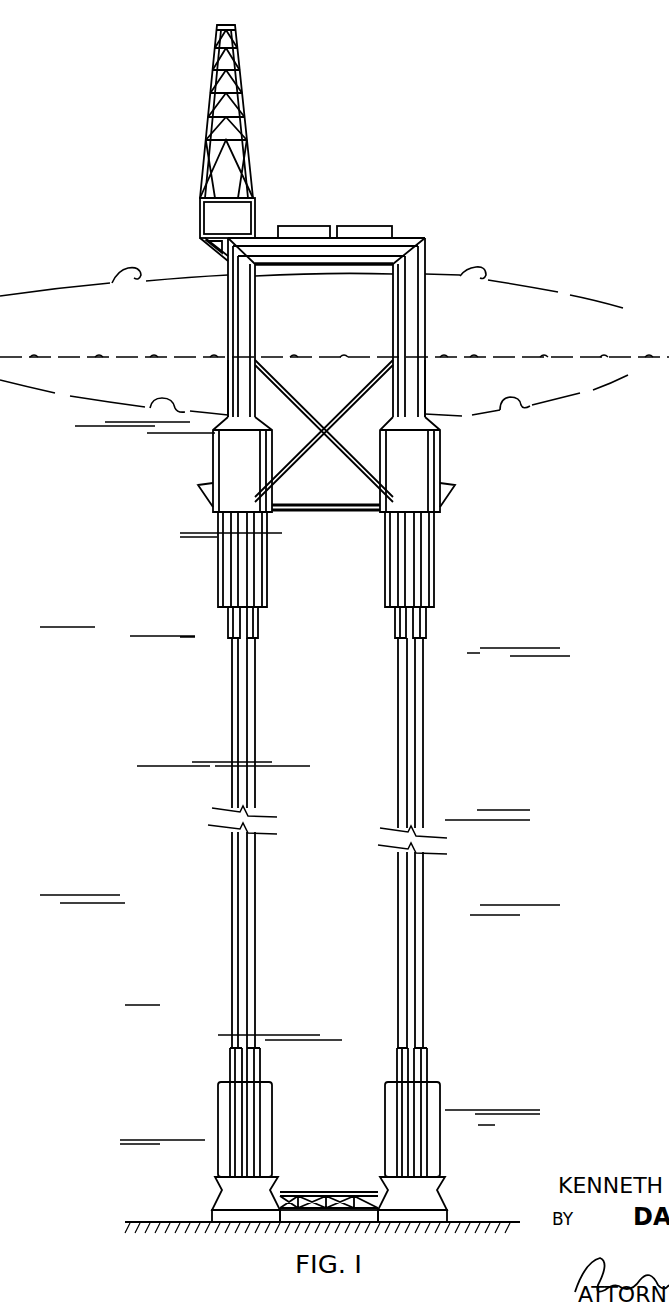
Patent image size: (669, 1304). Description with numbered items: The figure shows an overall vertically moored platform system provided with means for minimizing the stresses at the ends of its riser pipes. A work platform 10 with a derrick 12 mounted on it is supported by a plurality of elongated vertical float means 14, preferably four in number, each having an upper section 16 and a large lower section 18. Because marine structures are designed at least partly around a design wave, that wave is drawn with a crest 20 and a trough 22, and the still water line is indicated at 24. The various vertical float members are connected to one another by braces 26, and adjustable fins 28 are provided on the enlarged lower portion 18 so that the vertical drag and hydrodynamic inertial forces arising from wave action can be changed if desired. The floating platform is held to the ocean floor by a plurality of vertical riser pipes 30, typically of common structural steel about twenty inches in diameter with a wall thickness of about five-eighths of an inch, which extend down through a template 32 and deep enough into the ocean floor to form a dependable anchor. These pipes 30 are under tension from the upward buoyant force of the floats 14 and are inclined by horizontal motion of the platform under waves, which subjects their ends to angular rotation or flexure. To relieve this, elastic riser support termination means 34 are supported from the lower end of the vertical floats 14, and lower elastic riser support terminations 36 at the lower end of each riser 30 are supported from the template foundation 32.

The work platform 10 is at (400, 241).
The derrick 12 is at (238, 77).
The elongated vertical float means 14 is at (425, 312).
The upper section 16 is at (426, 386).
The large lower section 18 is at (430, 457).
The crest 20 is at (522, 285).
The trough 22 is at (125, 405).
The still water line 24 is at (578, 357).
The braces 26 is at (296, 512).
The adjustable fins 28 is at (452, 492).
The vertical riser pipes 30 is at (230, 725).
The template 32 is at (440, 1195).
The elastic riser support termination means 34 is at (437, 601).
The lower elastic riser support terminations 36 is at (437, 1082).